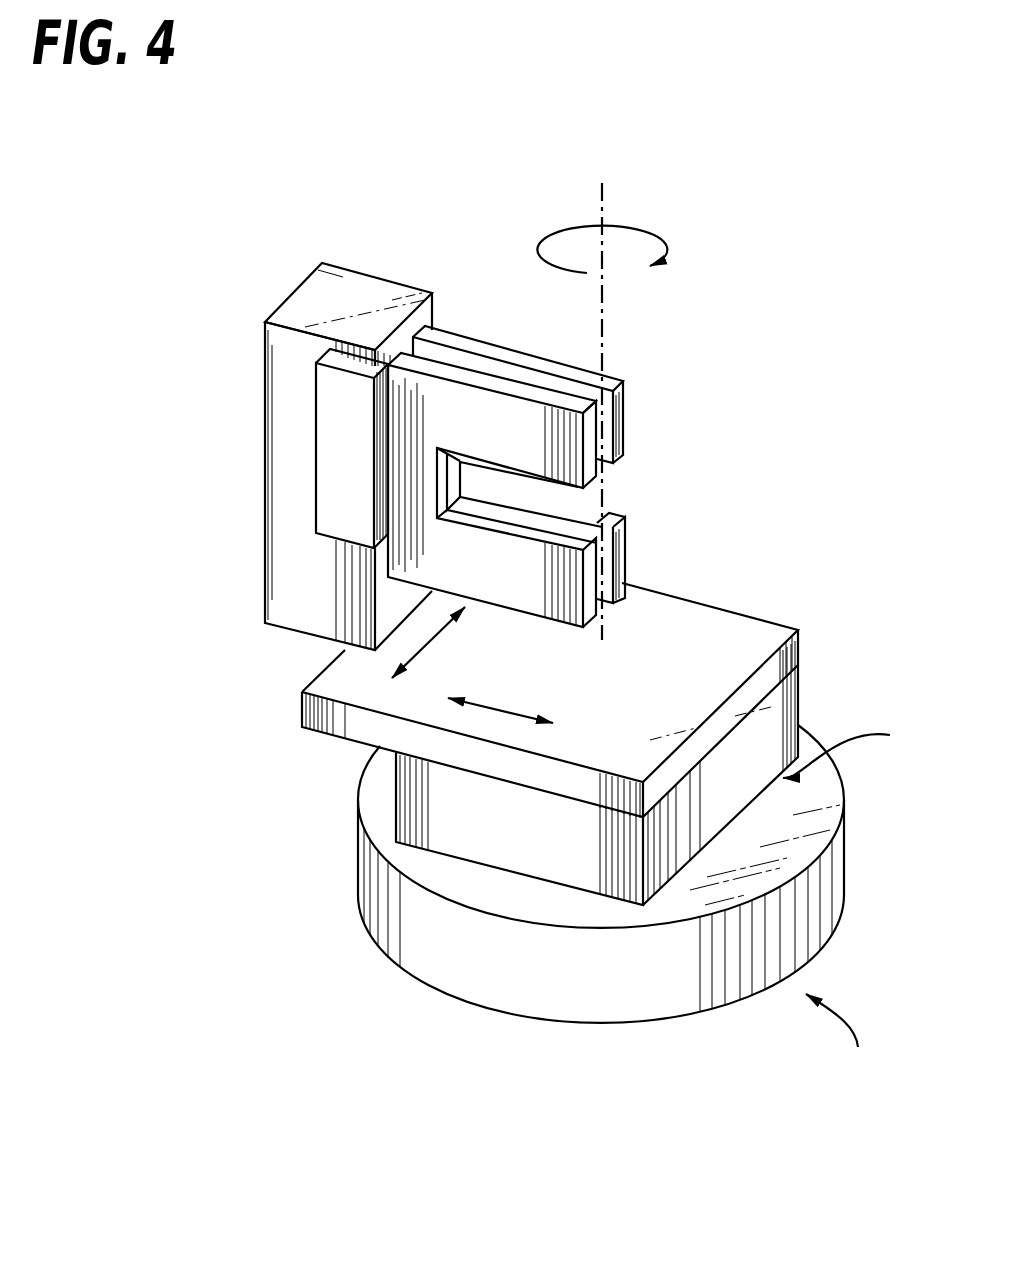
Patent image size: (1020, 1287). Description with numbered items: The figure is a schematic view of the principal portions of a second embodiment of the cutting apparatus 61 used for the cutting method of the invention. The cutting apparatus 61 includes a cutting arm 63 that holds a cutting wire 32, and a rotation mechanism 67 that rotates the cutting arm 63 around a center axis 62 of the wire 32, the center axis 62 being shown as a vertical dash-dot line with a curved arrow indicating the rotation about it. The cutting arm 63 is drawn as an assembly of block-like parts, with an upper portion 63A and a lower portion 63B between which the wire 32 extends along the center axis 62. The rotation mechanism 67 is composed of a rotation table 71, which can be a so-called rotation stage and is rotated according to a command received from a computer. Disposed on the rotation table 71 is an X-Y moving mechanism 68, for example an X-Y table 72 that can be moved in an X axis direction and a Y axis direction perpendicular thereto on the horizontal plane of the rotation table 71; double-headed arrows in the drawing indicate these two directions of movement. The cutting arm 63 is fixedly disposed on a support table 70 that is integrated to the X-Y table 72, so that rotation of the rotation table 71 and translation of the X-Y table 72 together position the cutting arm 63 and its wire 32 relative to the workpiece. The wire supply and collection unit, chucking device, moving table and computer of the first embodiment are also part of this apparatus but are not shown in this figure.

The cutting apparatus 61 is at (252, 224).
The center axis 62 is at (603, 197).
The cutting arm 63 is at (337, 450).
The upper arm of holder 63A is at (525, 413).
The lower arm of holder 63B is at (523, 603).
The cutting wire 32 is at (604, 497).
The support table 70 is at (345, 673).
The X-Y table 72 is at (777, 716).
The X-Y moving mechanism 68 is at (854, 749).
The rotation table 71 is at (723, 987).
The rotation mechanism 67 is at (842, 1037).